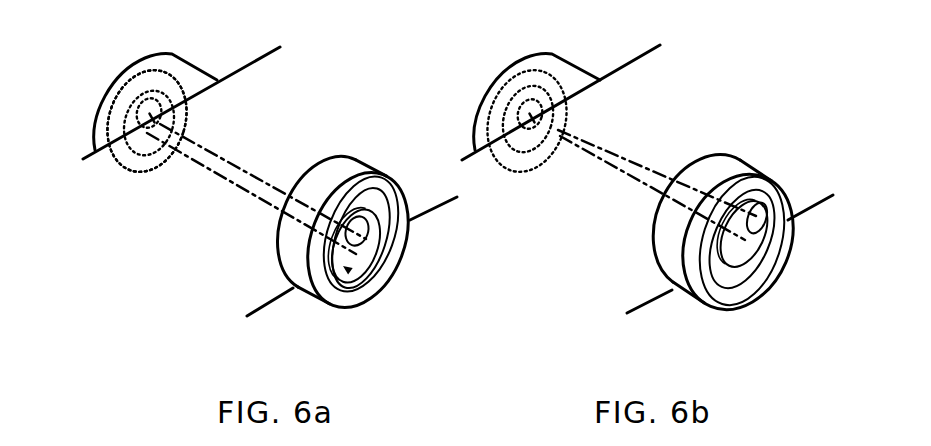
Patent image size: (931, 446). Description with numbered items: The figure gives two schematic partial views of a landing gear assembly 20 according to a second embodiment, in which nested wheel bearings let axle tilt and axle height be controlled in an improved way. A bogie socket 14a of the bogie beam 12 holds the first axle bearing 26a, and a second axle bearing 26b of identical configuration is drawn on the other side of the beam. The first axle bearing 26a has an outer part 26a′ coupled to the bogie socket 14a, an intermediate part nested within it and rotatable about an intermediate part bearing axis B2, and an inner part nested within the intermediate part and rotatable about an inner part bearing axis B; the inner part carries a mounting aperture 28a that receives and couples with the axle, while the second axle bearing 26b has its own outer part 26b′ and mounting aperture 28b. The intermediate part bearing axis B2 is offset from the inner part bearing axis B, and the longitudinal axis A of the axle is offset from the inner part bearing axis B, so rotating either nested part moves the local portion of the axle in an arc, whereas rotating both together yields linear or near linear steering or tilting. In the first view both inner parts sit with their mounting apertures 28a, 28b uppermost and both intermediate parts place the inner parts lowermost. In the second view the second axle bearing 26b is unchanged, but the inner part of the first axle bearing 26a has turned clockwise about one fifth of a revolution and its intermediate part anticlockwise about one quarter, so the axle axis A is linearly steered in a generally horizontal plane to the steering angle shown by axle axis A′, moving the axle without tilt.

In FIG. 6a, the bogie beam 12 is at (425, 187).
In FIG. 6b, the bogie beam 12 is at (807, 190).
In FIG. 6a, the bogie socket 14a is at (355, 166).
In FIG. 6b, the bogie socket 14a is at (735, 165).
In FIG. 6a, the landing gear assembly 20 is at (321, 101).
In FIG. 6b, the landing gear assembly 20 is at (749, 79).
In FIG. 6a, the first axle bearing 26a is at (352, 272).
In FIG. 6a, the outer part 26a′ is at (317, 302).
In FIG. 6a, the mounting aperture 28a is at (368, 242).
In FIG. 6b, the mounting aperture 28a is at (763, 210).
In FIG. 6a, the second axle bearing 26b is at (110, 99).
In FIG. 6a, the outer part 26b′ is at (108, 163).
In FIG. 6a, the mounting aperture 28b is at (147, 105).
In FIG. 6a, the longitudinal axis of the axle A is at (243, 171).
In FIG. 6b, the longitudinal axis of the axle A is at (640, 181).
In FIG. 6b, the steered axle axis A′ is at (633, 164).
In FIG. 6a, the inner part bearing axis B is at (210, 170).
In FIG. 6a, the intermediate part bearing axis B2 is at (207, 148).